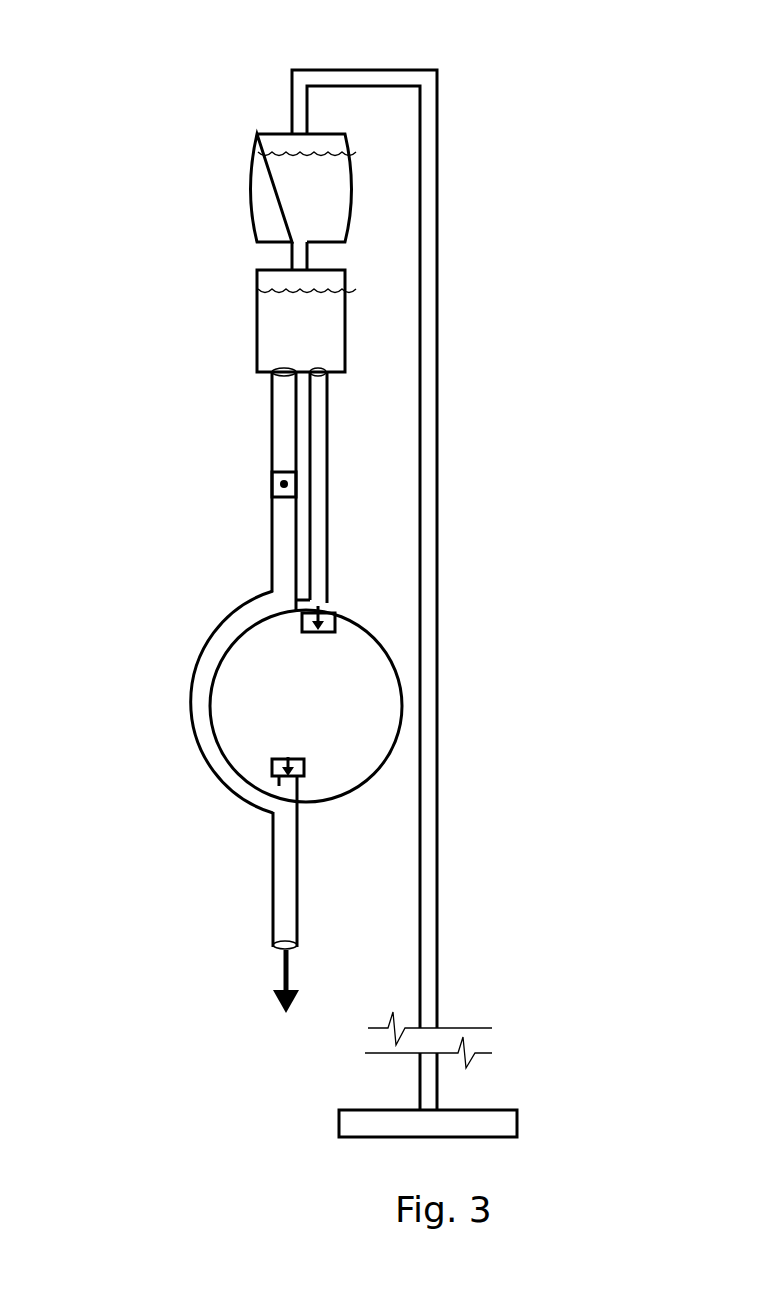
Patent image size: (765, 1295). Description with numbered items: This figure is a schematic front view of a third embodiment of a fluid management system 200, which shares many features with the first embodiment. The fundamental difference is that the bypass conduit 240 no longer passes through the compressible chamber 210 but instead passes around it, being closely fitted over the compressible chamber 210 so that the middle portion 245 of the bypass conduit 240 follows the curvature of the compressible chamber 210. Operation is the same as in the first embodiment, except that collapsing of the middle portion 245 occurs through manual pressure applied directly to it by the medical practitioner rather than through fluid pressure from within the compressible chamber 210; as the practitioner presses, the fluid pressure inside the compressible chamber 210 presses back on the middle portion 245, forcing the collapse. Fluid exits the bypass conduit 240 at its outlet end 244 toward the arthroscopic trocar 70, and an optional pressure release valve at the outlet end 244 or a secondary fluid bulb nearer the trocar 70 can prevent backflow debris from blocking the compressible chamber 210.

The fluid management system 200 is at (226, 88).
The bypass conduit 240 is at (272, 430).
The middle portion 245 is at (190, 680).
The compressible chamber 210 is at (363, 696).
The outlet end 244 is at (271, 885).
The arthroscopic trocar 70 is at (279, 970).